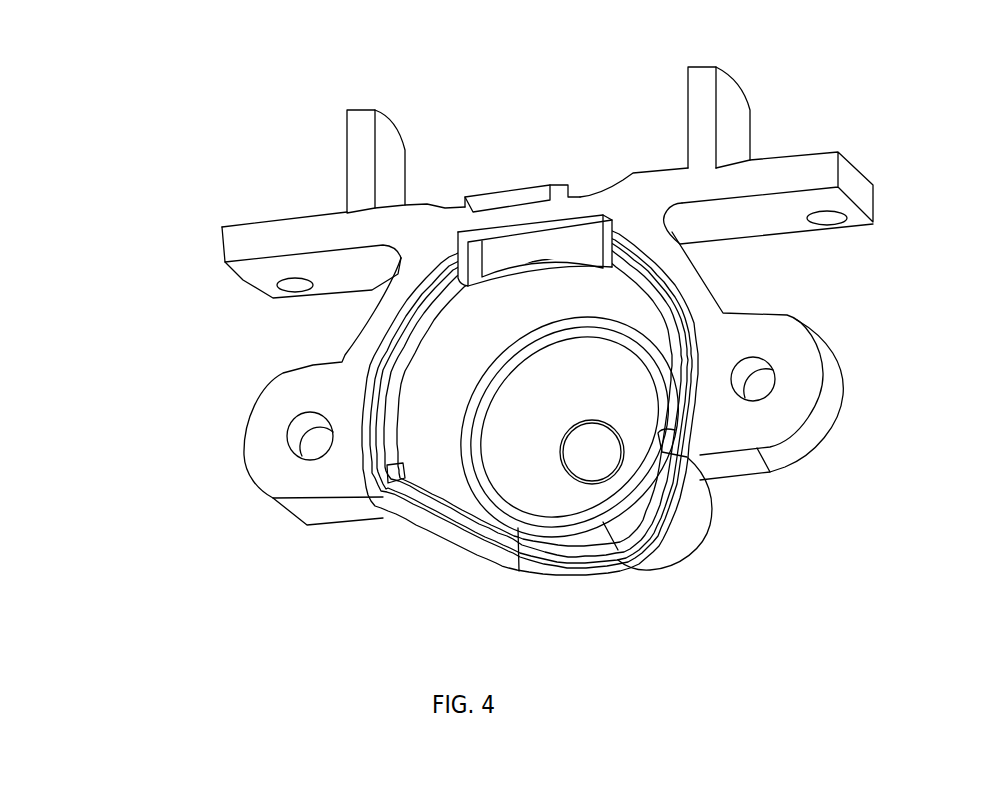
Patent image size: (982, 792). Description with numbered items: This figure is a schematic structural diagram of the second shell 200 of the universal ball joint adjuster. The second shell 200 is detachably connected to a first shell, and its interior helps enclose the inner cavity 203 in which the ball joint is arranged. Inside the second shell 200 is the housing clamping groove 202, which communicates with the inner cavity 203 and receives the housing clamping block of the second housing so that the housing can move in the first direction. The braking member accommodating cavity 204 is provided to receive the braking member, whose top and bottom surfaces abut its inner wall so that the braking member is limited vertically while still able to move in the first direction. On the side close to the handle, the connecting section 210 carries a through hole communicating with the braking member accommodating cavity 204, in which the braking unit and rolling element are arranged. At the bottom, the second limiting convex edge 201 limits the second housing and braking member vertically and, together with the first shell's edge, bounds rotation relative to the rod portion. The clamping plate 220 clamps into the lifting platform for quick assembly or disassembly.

The second shell 200 is at (222, 342).
The second limiting convex edge 201 is at (383, 517).
The housing clamping groove 202 is at (497, 250).
The inner cavity 203 is at (427, 382).
The braking member accommodating cavity 204 is at (533, 502).
The connecting section 210 is at (685, 540).
The clamping plate 220 is at (487, 191).